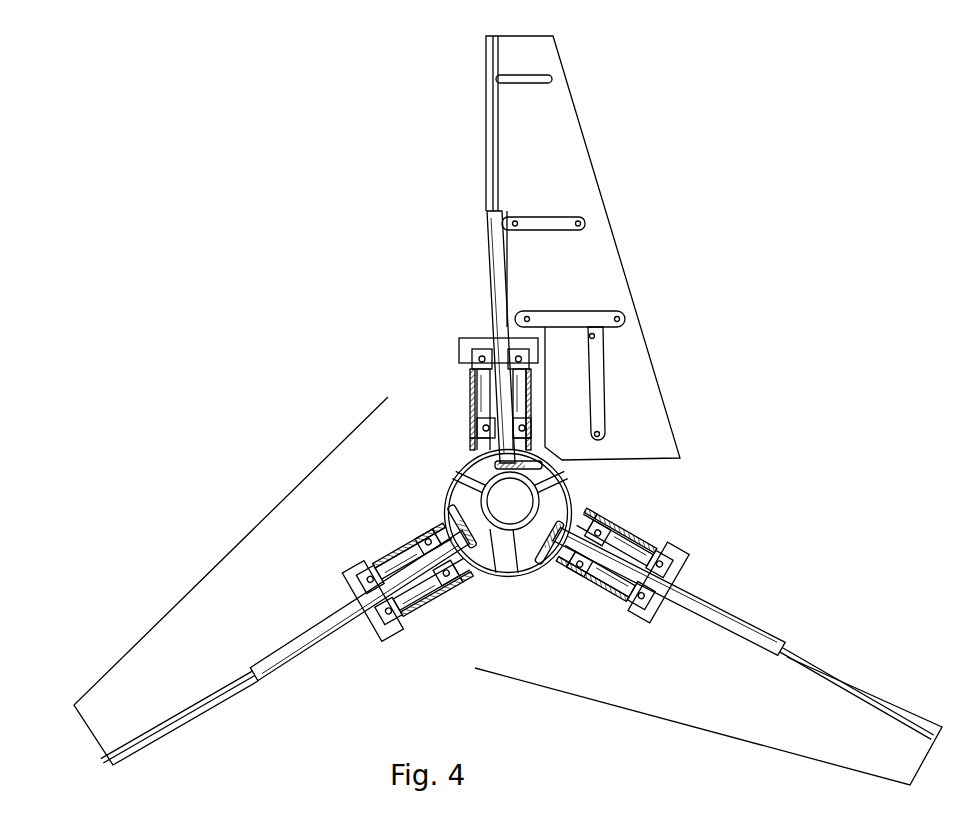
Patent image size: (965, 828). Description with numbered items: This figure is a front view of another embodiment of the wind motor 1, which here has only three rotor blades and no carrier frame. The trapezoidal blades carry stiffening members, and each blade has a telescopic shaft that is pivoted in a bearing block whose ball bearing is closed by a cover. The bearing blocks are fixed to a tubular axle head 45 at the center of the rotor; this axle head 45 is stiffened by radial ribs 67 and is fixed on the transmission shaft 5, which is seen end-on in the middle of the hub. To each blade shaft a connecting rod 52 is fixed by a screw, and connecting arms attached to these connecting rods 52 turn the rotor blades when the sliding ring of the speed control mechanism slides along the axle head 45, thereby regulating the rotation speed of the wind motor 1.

The wind motor 1 is at (401, 355).
The transmission shaft 5 is at (518, 527).
The tubular axle head 45 is at (568, 478).
The connecting rods 52 is at (525, 462).
The radial ribs 67 is at (525, 545).